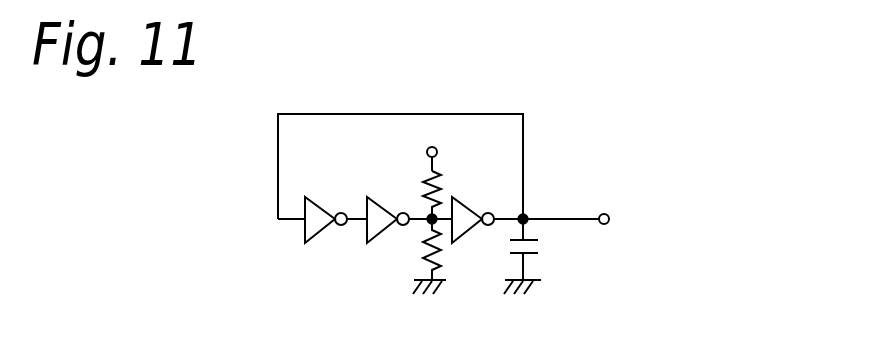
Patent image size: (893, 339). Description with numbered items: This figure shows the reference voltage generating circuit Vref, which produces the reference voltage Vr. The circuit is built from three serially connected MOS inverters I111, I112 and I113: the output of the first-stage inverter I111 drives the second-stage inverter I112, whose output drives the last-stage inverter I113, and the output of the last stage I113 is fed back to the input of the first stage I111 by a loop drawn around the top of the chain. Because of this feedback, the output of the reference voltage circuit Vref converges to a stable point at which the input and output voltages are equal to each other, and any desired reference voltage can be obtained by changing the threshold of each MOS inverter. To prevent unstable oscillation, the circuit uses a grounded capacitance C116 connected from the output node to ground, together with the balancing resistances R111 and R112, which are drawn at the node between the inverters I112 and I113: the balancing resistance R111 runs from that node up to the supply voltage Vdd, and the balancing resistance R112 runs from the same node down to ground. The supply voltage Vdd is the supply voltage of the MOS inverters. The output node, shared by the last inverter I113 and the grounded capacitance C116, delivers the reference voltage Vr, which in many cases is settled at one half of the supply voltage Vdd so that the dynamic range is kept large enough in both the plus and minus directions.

The inverter I111 is at (332, 207).
The inverter I112 is at (408, 207).
The inverter I113 is at (525, 207).
The balancing resistance R111 is at (425, 168).
The balancing resistance R112 is at (426, 250).
The grounded capacitance C116 is at (552, 258).
The reference voltage generating circuit Vref is at (581, 137).
The supply voltage Vdd is at (456, 155).
The reference voltage Vr is at (622, 218).